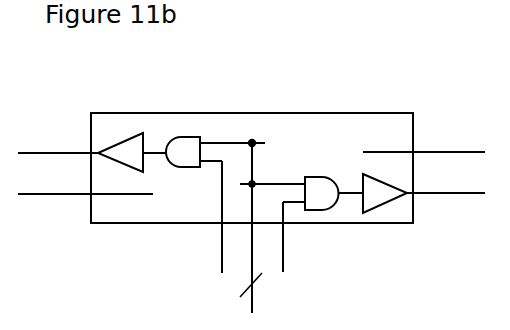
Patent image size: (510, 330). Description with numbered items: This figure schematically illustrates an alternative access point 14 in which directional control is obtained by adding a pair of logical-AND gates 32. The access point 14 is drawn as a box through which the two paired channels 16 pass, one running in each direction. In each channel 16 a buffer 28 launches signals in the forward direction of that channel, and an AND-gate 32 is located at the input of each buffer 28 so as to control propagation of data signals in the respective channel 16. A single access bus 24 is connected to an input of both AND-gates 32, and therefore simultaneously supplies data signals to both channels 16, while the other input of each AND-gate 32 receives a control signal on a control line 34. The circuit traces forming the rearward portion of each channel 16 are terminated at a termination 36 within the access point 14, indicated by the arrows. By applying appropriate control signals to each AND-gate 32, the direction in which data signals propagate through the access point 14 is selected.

The access point 14 is at (242, 112).
The channels 16 is at (72, 152).
The access bus 24 is at (252, 298).
The buffer 28 is at (124, 135).
The AND-gate 32 is at (186, 137).
The enable lines 34 is at (222, 260).
The termination 36 is at (156, 208).